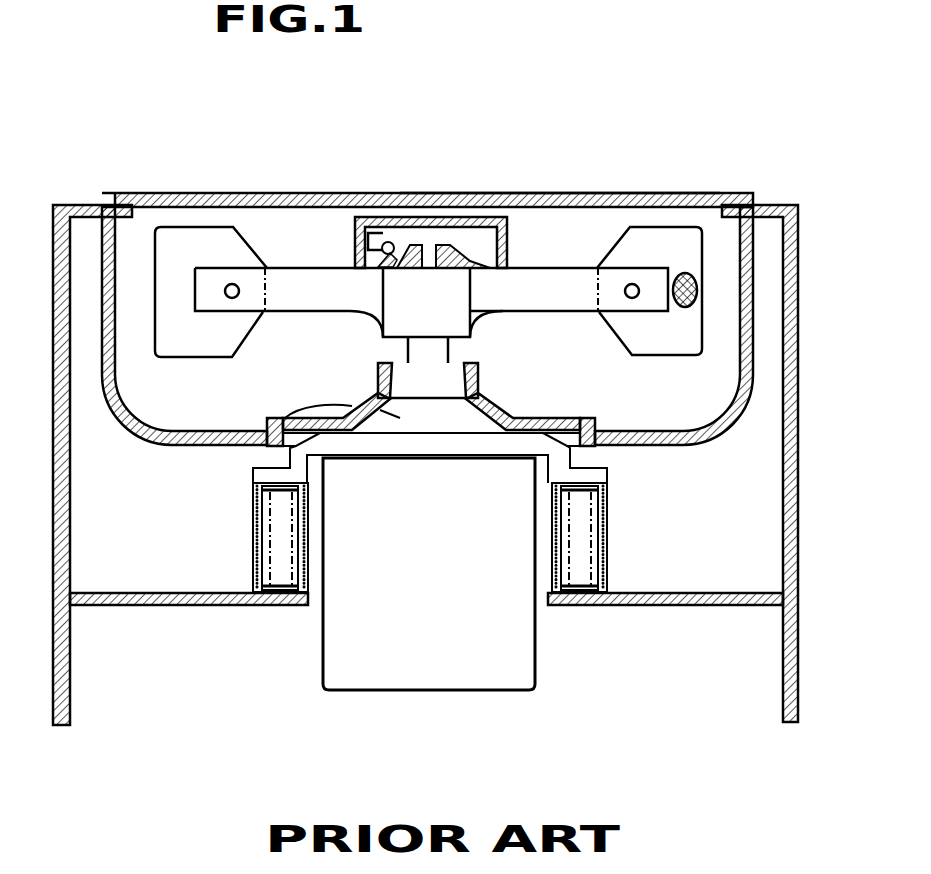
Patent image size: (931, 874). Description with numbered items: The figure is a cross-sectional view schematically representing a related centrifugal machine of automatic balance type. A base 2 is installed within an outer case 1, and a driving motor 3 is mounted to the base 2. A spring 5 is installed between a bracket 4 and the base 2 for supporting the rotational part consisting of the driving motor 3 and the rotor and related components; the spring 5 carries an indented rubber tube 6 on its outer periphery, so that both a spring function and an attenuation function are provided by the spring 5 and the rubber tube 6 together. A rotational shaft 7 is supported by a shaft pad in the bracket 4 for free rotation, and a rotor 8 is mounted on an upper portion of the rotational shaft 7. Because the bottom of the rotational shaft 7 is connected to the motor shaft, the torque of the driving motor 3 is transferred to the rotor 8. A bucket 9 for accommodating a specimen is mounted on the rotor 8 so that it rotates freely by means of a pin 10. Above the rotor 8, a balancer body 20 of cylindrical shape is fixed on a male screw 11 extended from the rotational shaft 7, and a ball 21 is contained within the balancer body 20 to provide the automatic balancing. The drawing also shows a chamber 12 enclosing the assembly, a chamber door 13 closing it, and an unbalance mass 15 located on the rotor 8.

The outer case 1 is at (68, 662).
The base 2 is at (165, 606).
The driving motor 3 is at (436, 655).
The bracket 4 is at (267, 446).
The spring 5 is at (256, 493).
The indented rubber tube 6 is at (255, 538).
The rotational shaft 7 is at (435, 352).
The rotor 8 is at (538, 282).
The bucket 9 is at (205, 236).
The pin 10 is at (236, 289).
The male screw 11 is at (428, 243).
The chamber 12 is at (114, 193).
The chamber door 13 is at (555, 192).
The unbalance mass 15 is at (687, 273).
The balancer body 20 is at (355, 245).
The ball 21 is at (366, 233).